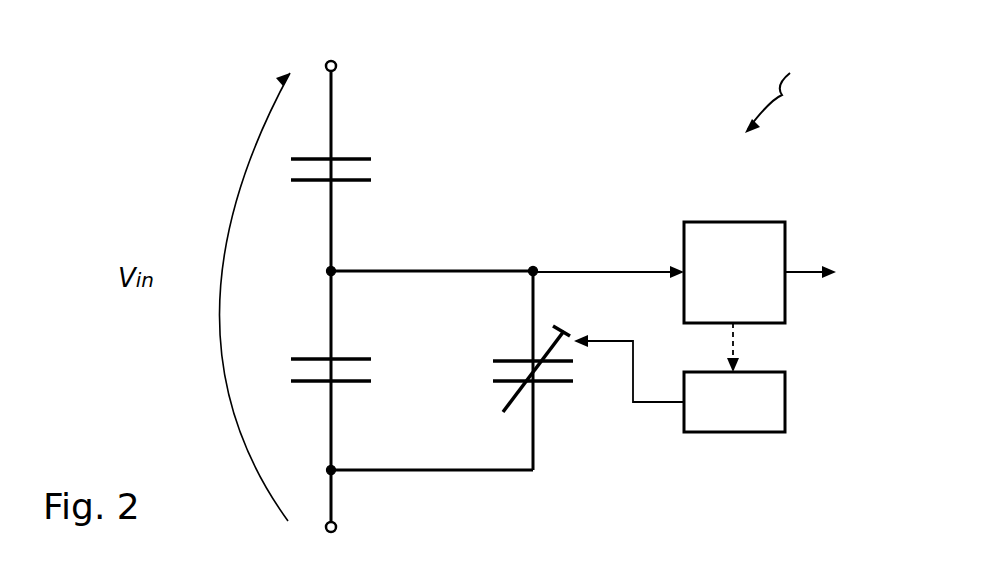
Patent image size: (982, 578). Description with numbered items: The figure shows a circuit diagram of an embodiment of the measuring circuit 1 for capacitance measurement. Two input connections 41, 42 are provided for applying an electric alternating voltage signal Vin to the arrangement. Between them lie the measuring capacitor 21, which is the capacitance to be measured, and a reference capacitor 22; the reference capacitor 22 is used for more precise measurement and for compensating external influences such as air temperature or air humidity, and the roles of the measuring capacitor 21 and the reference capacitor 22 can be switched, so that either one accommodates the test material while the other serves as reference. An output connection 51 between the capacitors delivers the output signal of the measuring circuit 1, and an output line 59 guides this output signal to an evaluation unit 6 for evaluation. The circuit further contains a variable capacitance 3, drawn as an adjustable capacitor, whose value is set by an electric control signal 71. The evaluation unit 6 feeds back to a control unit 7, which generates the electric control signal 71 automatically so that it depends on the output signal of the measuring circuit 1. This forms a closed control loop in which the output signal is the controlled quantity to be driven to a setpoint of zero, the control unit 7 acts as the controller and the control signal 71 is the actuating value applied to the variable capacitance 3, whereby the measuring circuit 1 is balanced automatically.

The measuring circuit 1 is at (781, 93).
The input connection 41 is at (340, 66).
The input connection 42 is at (340, 527).
The measuring capacitor 21 is at (354, 158).
The reference capacitor 22 is at (345, 384).
The output connection 51 is at (329, 271).
The variable capacitance 3 is at (548, 384).
The output line 59 is at (612, 275).
The evaluation unit 6 is at (733, 222).
The control unit 7 is at (735, 434).
The electric control signal 71 is at (641, 404).